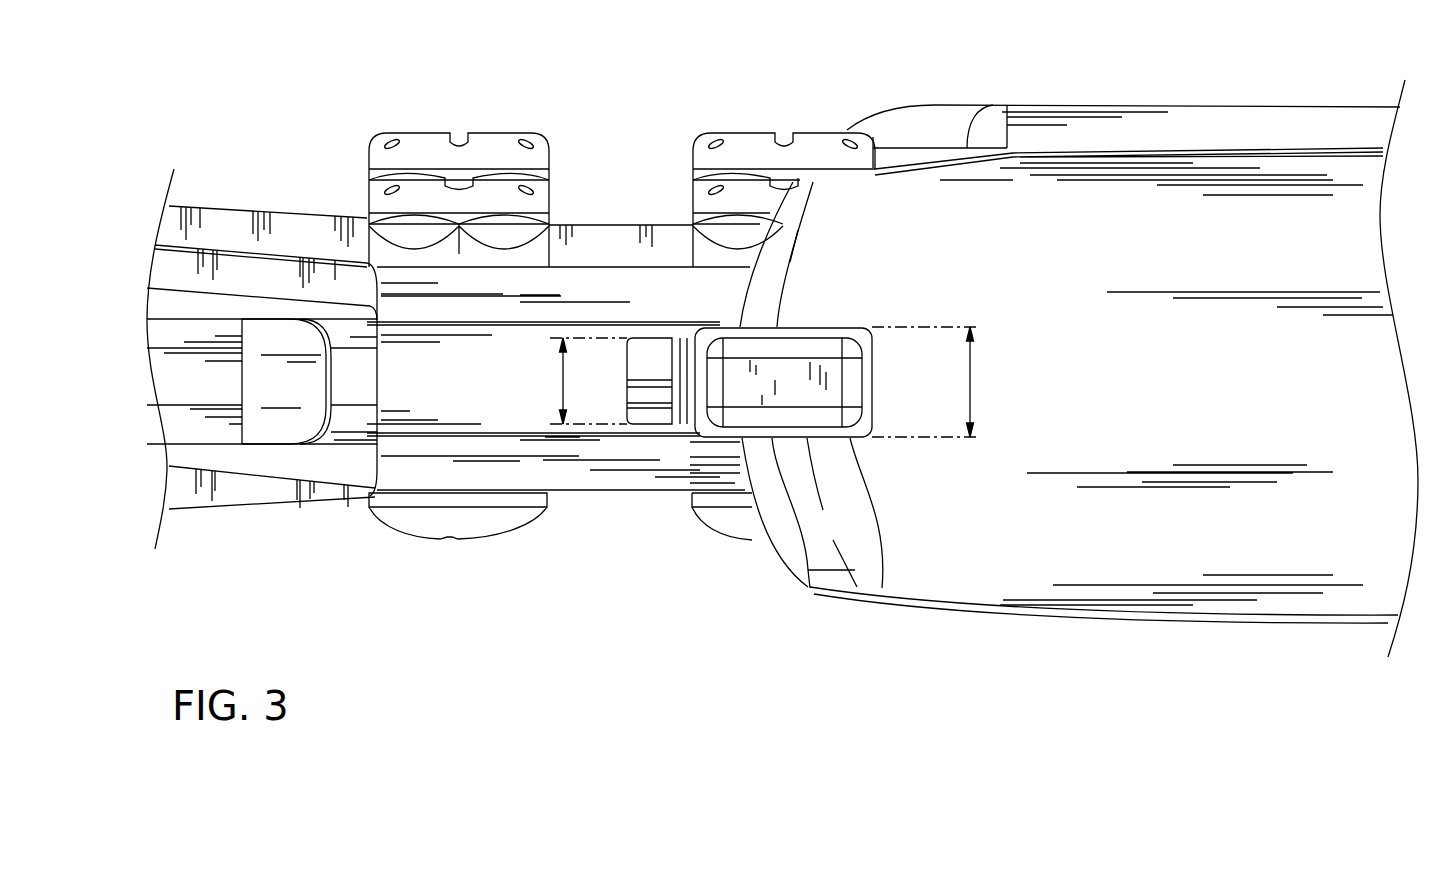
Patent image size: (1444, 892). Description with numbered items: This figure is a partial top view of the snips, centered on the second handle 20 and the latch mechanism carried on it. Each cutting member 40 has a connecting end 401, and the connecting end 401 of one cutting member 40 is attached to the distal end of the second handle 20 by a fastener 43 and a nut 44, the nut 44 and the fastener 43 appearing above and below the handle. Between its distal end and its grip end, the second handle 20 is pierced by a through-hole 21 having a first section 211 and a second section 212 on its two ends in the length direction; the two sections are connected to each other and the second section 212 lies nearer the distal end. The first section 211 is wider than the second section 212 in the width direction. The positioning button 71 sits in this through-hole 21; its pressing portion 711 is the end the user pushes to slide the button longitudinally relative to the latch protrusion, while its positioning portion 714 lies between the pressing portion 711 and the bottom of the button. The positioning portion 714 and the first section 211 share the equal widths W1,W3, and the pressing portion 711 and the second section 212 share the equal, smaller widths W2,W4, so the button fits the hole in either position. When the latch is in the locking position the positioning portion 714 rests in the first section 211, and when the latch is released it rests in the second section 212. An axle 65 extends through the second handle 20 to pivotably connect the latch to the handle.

The second handle 20 is at (1178, 634).
The through-hole 21 is at (860, 303).
The first section 211 is at (863, 387).
The second section 212 is at (645, 350).
The cutting member 40 is at (219, 311).
The connecting end 401 is at (351, 365).
The fastener 43 is at (418, 520).
The nut 44 is at (422, 238).
The axle 65 is at (722, 510).
The positioning button 71 is at (797, 452).
The pressing portion 711 is at (788, 395).
The positioning portion 714 is at (882, 588).
The first width and third width W1,W3 is at (975, 380).
The second width and fourth width W2,W4 is at (563, 381).